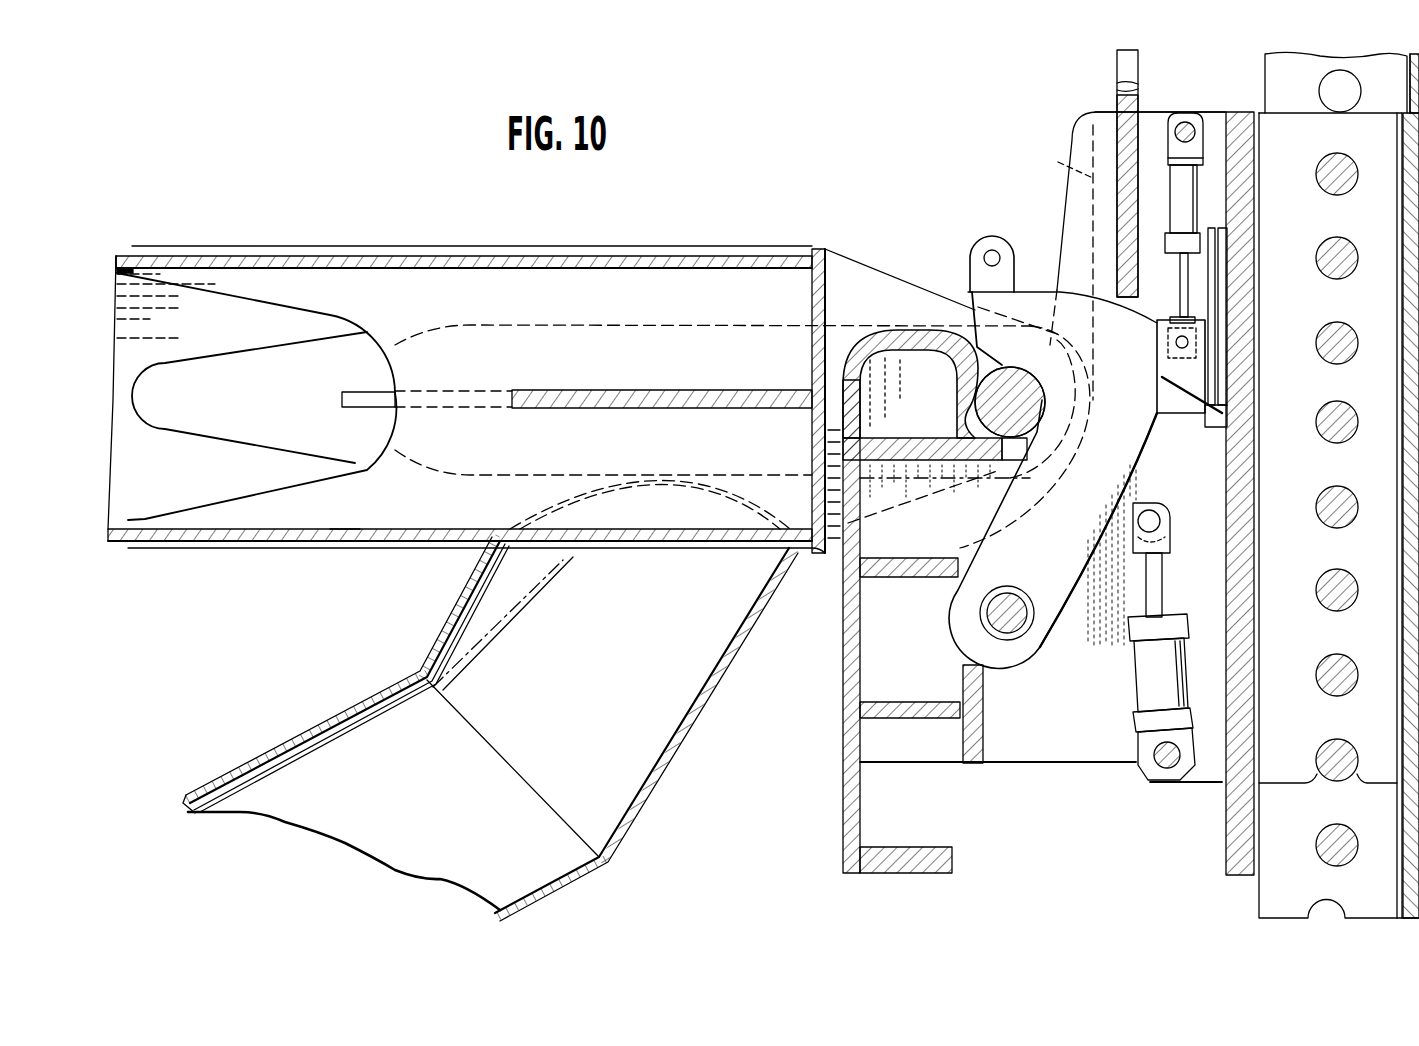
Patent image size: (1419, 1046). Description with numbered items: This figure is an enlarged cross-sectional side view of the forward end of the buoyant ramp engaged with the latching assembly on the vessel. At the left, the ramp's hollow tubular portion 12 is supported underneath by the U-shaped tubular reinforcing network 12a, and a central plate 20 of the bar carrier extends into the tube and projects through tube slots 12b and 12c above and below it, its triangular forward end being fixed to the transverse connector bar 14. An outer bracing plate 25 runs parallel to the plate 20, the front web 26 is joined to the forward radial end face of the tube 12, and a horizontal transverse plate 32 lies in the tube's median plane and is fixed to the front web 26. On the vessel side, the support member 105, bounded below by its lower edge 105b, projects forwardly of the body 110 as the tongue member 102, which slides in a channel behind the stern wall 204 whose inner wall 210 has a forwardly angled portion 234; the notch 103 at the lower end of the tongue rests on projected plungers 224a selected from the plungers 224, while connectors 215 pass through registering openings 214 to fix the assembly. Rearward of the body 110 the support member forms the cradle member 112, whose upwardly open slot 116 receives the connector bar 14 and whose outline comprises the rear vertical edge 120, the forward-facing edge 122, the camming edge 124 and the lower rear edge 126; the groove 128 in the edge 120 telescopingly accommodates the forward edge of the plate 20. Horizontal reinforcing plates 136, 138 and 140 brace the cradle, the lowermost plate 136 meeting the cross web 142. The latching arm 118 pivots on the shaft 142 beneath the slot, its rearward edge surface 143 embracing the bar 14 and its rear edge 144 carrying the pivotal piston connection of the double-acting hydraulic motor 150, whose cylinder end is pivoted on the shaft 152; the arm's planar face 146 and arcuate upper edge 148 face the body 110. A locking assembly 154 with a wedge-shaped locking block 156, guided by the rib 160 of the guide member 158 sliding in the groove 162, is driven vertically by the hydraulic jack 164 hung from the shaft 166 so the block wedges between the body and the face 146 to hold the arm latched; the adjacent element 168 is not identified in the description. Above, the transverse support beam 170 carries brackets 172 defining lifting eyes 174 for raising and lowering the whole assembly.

The tubular portion 12 is at (581, 262).
The U-shaped tubular reinforcing network 12a is at (655, 768).
The tube slot 12b is at (313, 257).
The tube slot 12c is at (343, 533).
The connector bar 14 is at (1016, 390).
The central plate 20 is at (447, 247).
The outer bracing plate 25 is at (183, 457).
The front web 26 is at (813, 250).
The horizontal transverse plate 32 is at (668, 390).
The tongue member 102 is at (1388, 389).
The notch 103 is at (1328, 752).
The support member 105 is at (1060, 262).
The lower edge 105b is at (905, 762).
The body member 110 is at (1245, 120).
The cradle member 112 is at (1062, 745).
The slot 116 is at (1045, 430).
The latching arm 118 is at (1150, 458).
The rearward vertical edge 120 is at (1068, 232).
The forward-facing vertical edge 122 is at (958, 395).
The camming edge 124 is at (908, 328).
The rear edge 126 is at (835, 530).
The groove 128 is at (1059, 163).
The reinforcing plate means 136 is at (943, 708).
The reinforcing plate means 138 is at (925, 577).
The reinforcing plate means 140 is at (965, 455).
The pivot shaft 142 is at (1022, 593).
The rearward edge surface 143 is at (1033, 472).
The rear edge 144 is at (1145, 435).
The planar face portion 146 is at (1152, 358).
The upper edge surface 148 is at (1070, 300).
The latching arm motor 150 is at (1150, 681).
The shaft 152 is at (1152, 752).
The locking assembly 154 is at (1215, 219).
The locking block 156 is at (1232, 345).
The guide member 158 is at (1222, 282).
The central rib 160 is at (1215, 305).
The vertical groove 162 is at (1218, 372).
The hydraulic jack 164 is at (1190, 212).
The shaft 166 is at (1186, 124).
The link 168 is at (1197, 413).
The support beam 170 is at (1067, 91).
The bracket 172 is at (1138, 64).
The lifting eye 174 is at (1125, 90).
The stern wall 204 is at (1262, 890).
The inner wall 210 is at (1366, 805).
The opening 214 is at (1333, 92).
The connector 215 is at (1357, 568).
The plunger 224 is at (1320, 432).
The projected plunger 224a is at (1318, 762).
The forward portion 234 is at (1400, 500).